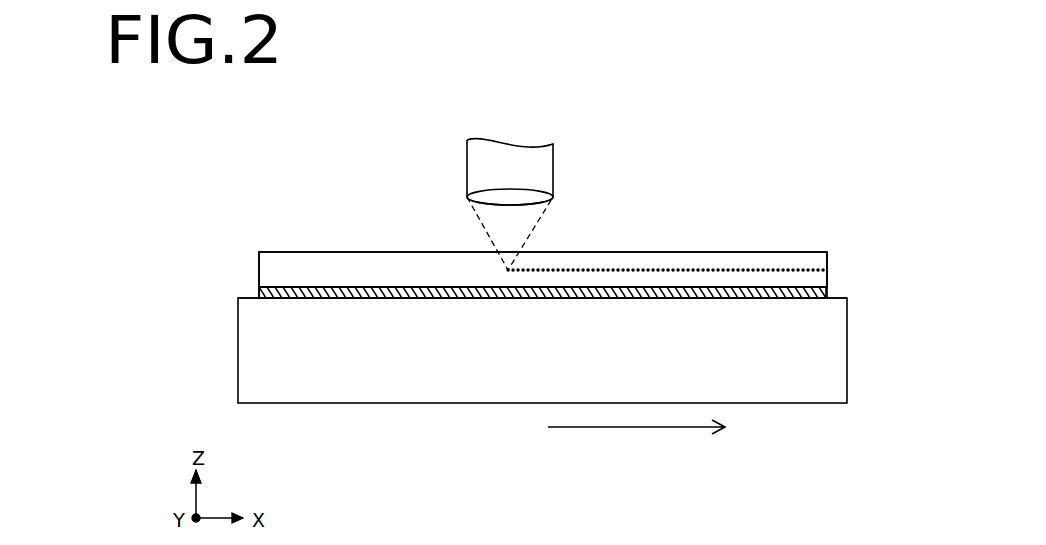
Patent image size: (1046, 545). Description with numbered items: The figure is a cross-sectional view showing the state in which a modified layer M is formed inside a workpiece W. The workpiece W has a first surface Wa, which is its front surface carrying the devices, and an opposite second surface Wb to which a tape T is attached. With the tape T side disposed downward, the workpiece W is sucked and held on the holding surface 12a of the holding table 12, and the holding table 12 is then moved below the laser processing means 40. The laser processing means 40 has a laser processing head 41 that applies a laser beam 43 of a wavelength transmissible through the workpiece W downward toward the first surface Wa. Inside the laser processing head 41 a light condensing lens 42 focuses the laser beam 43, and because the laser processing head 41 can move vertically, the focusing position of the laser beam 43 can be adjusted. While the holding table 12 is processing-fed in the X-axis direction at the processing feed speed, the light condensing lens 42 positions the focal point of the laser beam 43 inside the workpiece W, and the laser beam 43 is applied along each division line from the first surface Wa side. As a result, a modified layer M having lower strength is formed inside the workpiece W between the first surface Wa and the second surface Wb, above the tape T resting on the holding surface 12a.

The holding table 12 is at (478, 377).
The holding surface 12a is at (383, 297).
The laser processing means 40 is at (502, 160).
The laser processing head 41 is at (528, 153).
The light condensing lens 42 is at (487, 198).
The laser beam 43 is at (543, 220).
The modified layer M is at (541, 268).
The workpiece W is at (783, 258).
The first surface Wa is at (720, 252).
The second surface Wb is at (636, 300).
The tape T is at (826, 296).